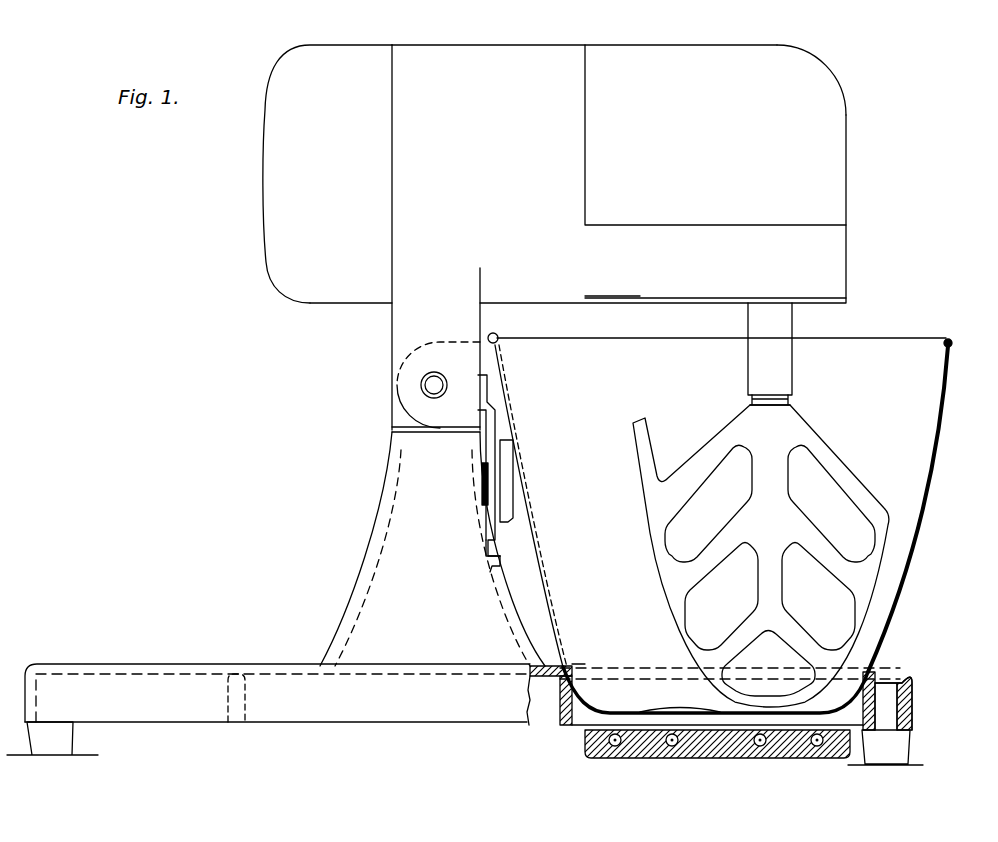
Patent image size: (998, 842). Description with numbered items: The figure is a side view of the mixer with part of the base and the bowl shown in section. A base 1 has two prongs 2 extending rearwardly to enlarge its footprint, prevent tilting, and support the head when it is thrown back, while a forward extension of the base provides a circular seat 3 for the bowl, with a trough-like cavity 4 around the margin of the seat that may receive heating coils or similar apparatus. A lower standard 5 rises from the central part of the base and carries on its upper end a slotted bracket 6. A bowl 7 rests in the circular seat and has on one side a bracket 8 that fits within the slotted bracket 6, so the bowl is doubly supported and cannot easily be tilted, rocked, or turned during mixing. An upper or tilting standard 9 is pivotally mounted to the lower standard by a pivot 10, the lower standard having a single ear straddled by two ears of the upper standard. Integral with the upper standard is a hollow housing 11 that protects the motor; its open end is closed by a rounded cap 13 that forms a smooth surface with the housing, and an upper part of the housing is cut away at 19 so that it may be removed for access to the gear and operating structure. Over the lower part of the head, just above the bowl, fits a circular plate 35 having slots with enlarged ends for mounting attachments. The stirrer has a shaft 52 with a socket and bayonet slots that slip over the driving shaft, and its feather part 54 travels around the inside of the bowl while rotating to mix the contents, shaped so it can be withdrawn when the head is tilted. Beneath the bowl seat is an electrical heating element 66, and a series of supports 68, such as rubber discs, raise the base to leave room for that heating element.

The base 1 is at (291, 640).
The prongs 2 is at (160, 687).
The circular seat 3 is at (871, 676).
The cavity 4 is at (893, 701).
The lower standard 5 is at (401, 509).
The slotted bracket 6 is at (497, 540).
The bowl 7 is at (897, 356).
The bracket 8 is at (500, 480).
The upper or tilting standard 9 is at (396, 327).
The pivot 10 is at (420, 384).
The housing 11 is at (455, 72).
The cap 13 is at (290, 210).
The cut away part 19 is at (832, 111).
The circular plate 35 is at (643, 282).
The stirrer shaft 52 is at (755, 360).
The feather part of the stirrer 54 is at (857, 617).
The heating element 66 is at (668, 735).
The supports 68 is at (74, 741).